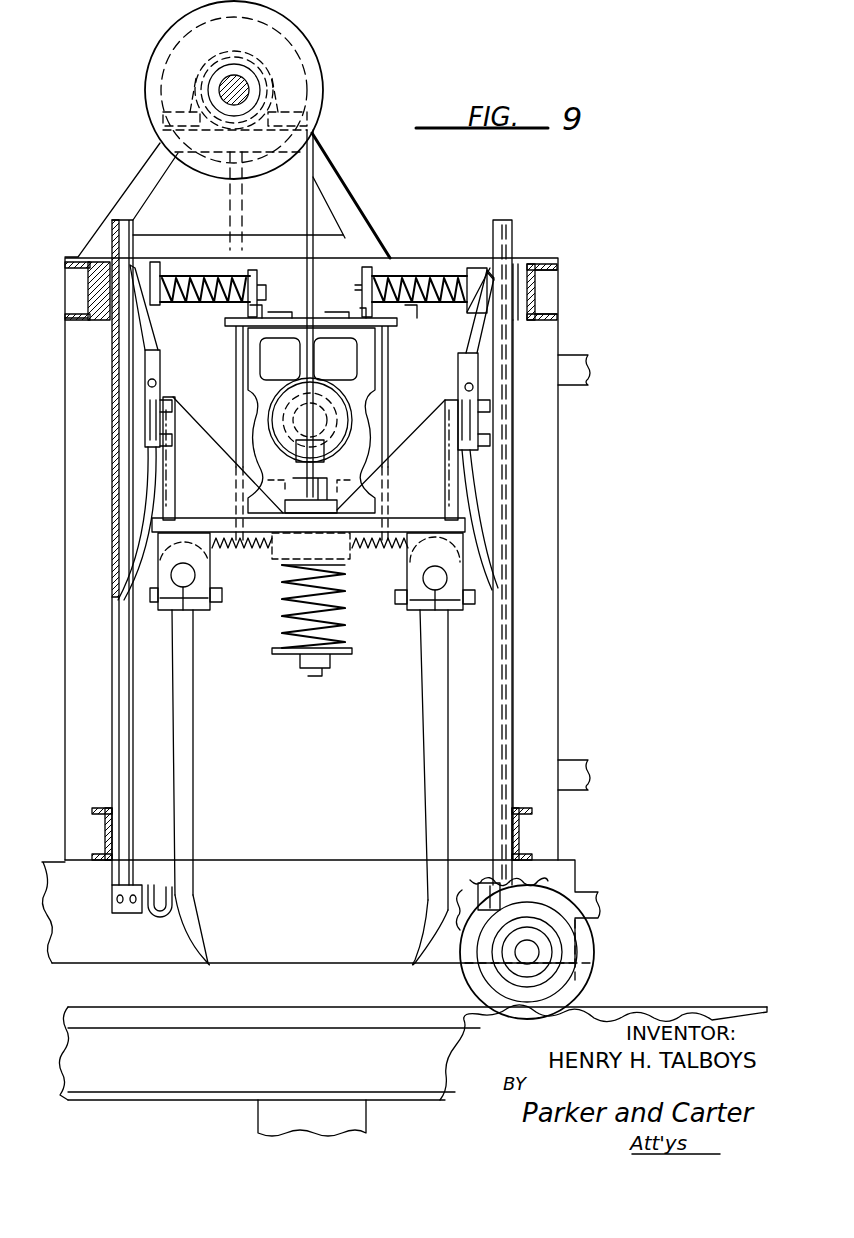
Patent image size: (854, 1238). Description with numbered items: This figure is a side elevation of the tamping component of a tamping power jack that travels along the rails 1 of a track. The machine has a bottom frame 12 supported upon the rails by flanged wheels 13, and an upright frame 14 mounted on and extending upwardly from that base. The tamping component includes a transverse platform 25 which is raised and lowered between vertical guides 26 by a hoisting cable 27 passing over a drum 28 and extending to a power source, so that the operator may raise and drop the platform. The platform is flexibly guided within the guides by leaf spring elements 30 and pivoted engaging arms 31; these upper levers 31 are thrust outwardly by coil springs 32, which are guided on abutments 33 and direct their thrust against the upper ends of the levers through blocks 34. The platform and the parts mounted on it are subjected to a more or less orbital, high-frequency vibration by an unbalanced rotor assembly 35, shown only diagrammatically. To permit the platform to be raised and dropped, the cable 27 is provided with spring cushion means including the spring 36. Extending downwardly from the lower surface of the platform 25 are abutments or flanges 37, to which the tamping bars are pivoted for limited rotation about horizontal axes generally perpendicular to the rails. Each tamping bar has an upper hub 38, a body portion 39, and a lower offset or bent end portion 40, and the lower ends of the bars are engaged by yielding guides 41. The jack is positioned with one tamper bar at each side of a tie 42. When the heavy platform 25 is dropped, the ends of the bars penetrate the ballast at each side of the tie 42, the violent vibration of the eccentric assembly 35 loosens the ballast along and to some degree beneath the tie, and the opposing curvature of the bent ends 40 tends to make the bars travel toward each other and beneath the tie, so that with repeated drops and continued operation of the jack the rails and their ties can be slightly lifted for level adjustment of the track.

The rails 1 is at (88, 1051).
The bottom frame 12 is at (335, 910).
The flanged wheels 13 is at (578, 982).
The frame 14 is at (557, 706).
The transverse platform 25 is at (416, 530).
The vertical guides 26 is at (112, 622).
The hoisting cable 27 is at (313, 232).
The drum 28 is at (303, 66).
The leaf spring elements 30 is at (147, 494).
The pivoted engaging arms 31 is at (478, 337).
The coil springs 32 is at (438, 280).
The abutments 33 is at (392, 280).
The blocks 34 is at (486, 278).
The unbalanced rotor assembly 35 is at (350, 426).
The spring 36 is at (278, 634).
The abutments or flanges 37 is at (204, 572).
The upper hub 38 is at (172, 592).
The body portion 39 is at (185, 676).
The lower offset or bent end portion 40 is at (194, 944).
The yielding guides 41 is at (163, 922).
The tie 42 is at (258, 1122).